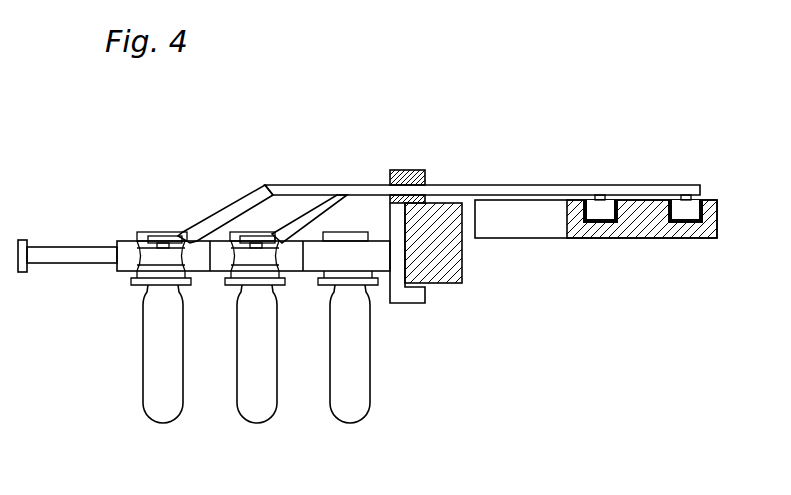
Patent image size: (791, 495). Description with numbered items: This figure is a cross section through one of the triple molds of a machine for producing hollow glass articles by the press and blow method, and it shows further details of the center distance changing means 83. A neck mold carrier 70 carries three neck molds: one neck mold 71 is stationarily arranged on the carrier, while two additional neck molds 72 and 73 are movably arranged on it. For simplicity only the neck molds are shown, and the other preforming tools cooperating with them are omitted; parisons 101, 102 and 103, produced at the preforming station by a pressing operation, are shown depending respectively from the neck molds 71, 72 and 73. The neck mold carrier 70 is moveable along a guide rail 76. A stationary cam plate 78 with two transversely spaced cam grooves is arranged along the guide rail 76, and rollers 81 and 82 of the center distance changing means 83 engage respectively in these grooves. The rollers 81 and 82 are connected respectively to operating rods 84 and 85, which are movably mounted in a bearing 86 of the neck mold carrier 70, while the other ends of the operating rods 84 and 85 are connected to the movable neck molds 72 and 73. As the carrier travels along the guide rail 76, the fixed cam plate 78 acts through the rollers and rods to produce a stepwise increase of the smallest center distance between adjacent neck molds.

The neck mold carrier 70 is at (62, 270).
The neck mold 71 is at (318, 236).
The neck mold 72 is at (219, 238).
The neck mold 73 is at (132, 238).
The guide rail 76 is at (455, 278).
The cam plate 78 is at (548, 243).
The roller 81 is at (603, 212).
The roller 82 is at (687, 212).
The center distance changing means 83 is at (347, 181).
The operating rod 84 is at (318, 205).
The operating rod 85 is at (244, 201).
The bearing 86 is at (415, 173).
The parison 101 is at (371, 360).
The parison 102 is at (276, 370).
The parison 103 is at (183, 372).